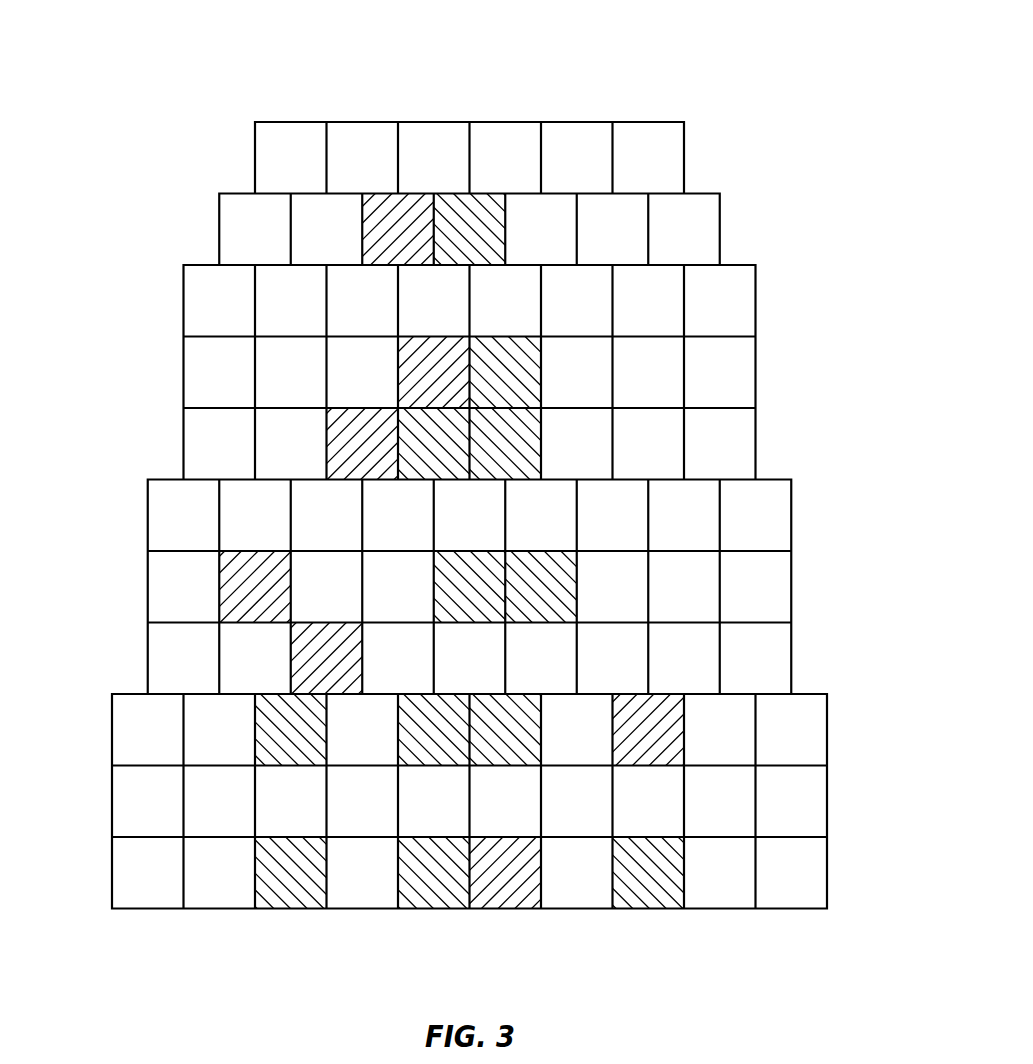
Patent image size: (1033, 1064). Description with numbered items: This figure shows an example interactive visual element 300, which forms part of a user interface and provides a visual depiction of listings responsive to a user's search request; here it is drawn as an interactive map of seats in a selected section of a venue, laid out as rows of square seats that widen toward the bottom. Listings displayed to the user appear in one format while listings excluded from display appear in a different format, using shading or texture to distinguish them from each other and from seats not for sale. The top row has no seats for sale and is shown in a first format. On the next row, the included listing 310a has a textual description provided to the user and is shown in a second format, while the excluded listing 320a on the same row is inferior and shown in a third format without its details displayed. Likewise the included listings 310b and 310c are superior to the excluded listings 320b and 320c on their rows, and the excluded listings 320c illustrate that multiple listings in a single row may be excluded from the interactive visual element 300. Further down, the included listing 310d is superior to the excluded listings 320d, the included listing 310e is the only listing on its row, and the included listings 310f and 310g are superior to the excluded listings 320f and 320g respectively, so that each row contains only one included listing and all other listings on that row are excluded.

The interactive visual element 300 is at (777, 47).
The included listing 310a is at (398, 208).
The excluded listing 320a is at (478, 208).
The included listing 310b is at (448, 374).
The excluded listing 320b is at (527, 397).
The included listing 310c is at (337, 461).
The excluded listings 320c is at (480, 426).
The included listing 310d is at (227, 582).
The excluded listings 320d is at (468, 565).
The included listing 310e is at (293, 682).
The included listing 310f is at (660, 732).
The excluded listings 320f is at (503, 748).
The included listing 310g is at (502, 890).
The excluded listings 320g is at (408, 873).